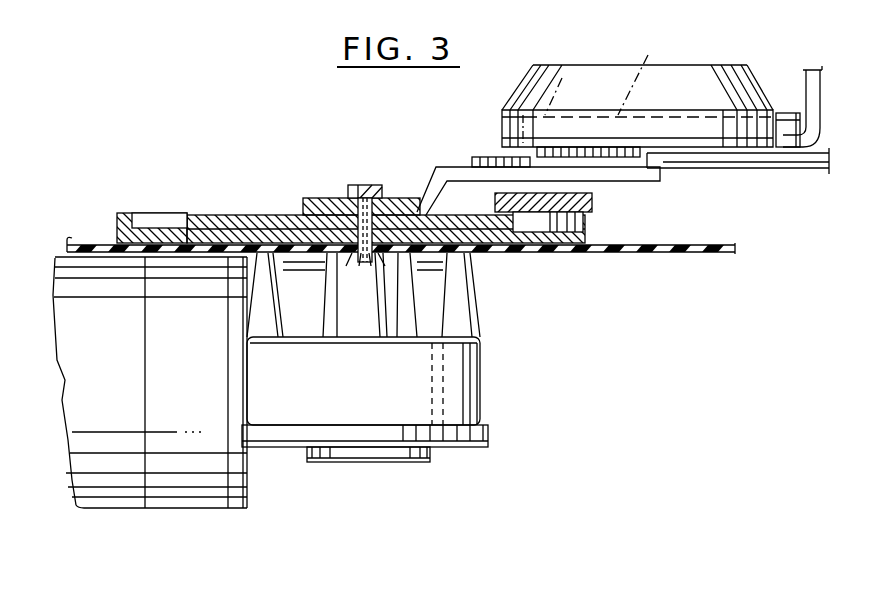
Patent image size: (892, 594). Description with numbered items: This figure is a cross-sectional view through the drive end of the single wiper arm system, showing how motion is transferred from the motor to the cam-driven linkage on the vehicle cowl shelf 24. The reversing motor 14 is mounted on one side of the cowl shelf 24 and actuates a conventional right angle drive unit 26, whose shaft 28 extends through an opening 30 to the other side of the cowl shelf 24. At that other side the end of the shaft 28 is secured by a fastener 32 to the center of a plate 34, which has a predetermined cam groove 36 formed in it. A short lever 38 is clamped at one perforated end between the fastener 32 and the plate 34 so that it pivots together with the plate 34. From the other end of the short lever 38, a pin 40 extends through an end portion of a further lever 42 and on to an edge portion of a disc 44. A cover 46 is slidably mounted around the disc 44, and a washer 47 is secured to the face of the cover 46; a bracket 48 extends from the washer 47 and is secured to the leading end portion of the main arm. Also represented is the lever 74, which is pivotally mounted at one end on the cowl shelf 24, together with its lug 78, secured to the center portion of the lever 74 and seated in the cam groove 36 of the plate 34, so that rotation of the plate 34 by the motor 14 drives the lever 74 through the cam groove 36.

The reversing motor 14 is at (190, 515).
The vehicle cowl shelf 24 is at (640, 253).
The right angle drive unit 26 is at (460, 450).
The shaft 28 is at (372, 252).
The opening 30 is at (372, 205).
The fastener 32 is at (356, 185).
The plate 34 is at (240, 215).
The cam groove 36 is at (128, 222).
The short lever 38 is at (447, 166).
The pin 40 is at (498, 157).
The lever 42 is at (763, 168).
The disc 44 is at (608, 72).
The cover 46 is at (690, 65).
The washer 47 is at (682, 150).
The bracket 48 is at (812, 78).
The lever 74 is at (585, 202).
The lug 78 is at (587, 222).